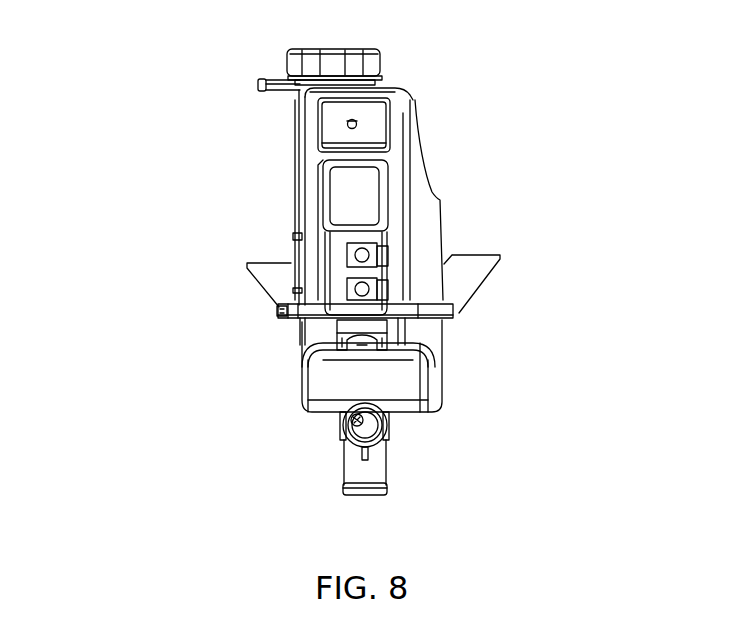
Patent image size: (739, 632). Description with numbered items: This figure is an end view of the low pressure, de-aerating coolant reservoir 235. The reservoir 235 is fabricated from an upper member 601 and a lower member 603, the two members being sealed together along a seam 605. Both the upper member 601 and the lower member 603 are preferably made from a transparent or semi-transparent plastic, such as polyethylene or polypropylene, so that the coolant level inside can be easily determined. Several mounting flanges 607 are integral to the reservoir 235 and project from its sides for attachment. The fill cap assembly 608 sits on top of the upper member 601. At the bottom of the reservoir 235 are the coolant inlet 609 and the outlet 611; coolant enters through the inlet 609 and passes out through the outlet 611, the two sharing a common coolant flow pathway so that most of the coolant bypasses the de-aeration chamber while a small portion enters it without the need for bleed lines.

The coolant reservoir 235 is at (148, 153).
The upper member 601 is at (417, 215).
The lower member 603 is at (432, 365).
The seam 605 is at (430, 310).
The mounting flanges 607 is at (363, 132).
The fill cap assembly 608 is at (327, 62).
The inlet 609 is at (357, 463).
The outlet 611 is at (368, 428).